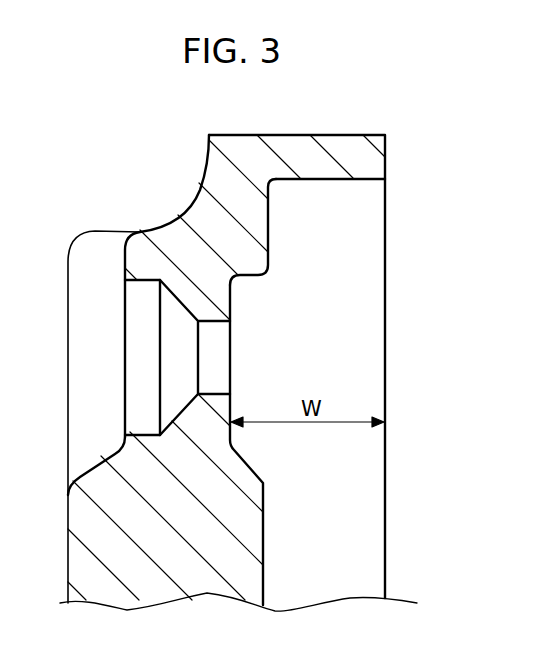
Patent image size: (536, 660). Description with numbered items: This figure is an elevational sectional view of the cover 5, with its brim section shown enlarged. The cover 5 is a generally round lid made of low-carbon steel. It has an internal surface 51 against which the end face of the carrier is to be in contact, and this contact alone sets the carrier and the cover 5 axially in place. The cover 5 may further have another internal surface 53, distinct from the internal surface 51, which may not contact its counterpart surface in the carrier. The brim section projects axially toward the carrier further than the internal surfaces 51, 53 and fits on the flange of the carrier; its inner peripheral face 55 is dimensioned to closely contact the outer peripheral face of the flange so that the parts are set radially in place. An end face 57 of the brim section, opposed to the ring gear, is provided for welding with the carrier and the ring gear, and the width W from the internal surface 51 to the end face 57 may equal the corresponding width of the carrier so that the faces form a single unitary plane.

The cover 5 is at (124, 157).
The internal surface 51 is at (231, 300).
The internal surface 53 is at (270, 255).
The inner peripheral face 55 is at (325, 179).
The end face 57 is at (385, 152).